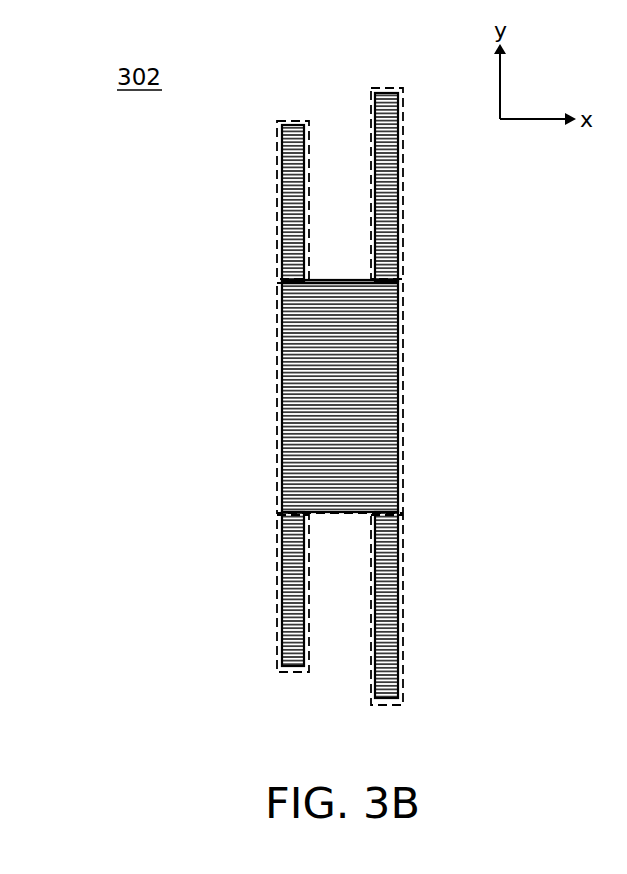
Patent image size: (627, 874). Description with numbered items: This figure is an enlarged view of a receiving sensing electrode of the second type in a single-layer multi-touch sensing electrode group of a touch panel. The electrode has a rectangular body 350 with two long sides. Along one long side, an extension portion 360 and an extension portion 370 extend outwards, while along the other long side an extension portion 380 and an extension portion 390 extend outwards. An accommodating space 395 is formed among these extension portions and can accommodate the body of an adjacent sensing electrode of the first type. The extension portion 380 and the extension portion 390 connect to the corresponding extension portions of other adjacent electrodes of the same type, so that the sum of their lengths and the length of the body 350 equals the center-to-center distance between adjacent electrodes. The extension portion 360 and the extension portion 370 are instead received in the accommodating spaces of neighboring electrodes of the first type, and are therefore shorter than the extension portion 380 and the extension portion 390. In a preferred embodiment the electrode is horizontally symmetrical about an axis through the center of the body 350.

The body 350 is at (403, 362).
The extension portion 360 is at (277, 213).
The extension portion 370 is at (278, 605).
The extension portion 380 is at (403, 170).
The extension portion 390 is at (403, 610).
The accommodating space 395 is at (342, 130).